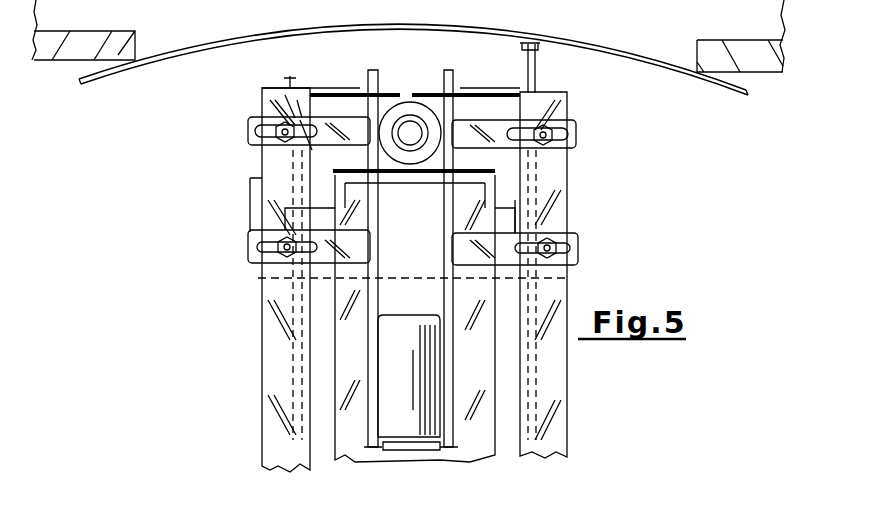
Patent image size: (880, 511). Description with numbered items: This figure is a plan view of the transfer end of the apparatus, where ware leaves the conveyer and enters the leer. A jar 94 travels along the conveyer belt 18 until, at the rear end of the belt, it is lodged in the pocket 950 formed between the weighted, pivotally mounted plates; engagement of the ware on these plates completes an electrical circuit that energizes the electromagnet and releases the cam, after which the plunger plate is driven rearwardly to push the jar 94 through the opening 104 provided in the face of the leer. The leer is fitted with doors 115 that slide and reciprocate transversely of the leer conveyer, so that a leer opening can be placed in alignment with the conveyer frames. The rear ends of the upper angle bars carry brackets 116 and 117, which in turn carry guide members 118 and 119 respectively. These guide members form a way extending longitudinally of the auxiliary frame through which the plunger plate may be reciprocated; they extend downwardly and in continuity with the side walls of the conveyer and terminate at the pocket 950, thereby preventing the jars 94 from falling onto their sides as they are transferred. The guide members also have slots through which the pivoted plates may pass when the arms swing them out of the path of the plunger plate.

The opening 104 is at (680, 57).
The doors 115 is at (742, 96).
The bracket 116 is at (580, 125).
The bracket 117 is at (250, 135).
The guide member 118 is at (447, 157).
The guide member 119 is at (350, 155).
The conveyer belt 18 is at (345, 222).
The jar 94 is at (423, 110).
The pocket 950 is at (383, 107).